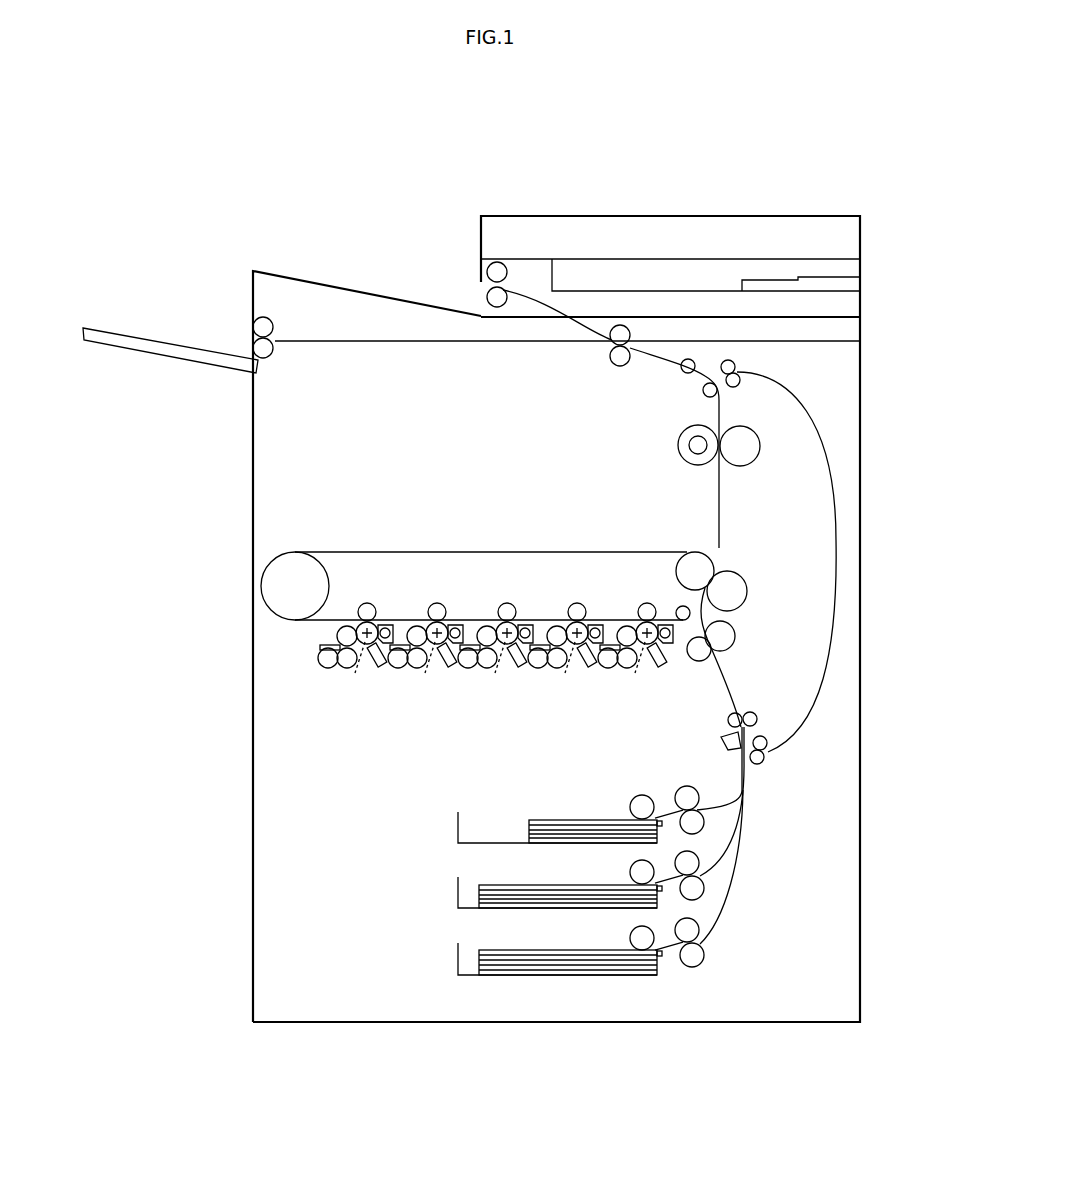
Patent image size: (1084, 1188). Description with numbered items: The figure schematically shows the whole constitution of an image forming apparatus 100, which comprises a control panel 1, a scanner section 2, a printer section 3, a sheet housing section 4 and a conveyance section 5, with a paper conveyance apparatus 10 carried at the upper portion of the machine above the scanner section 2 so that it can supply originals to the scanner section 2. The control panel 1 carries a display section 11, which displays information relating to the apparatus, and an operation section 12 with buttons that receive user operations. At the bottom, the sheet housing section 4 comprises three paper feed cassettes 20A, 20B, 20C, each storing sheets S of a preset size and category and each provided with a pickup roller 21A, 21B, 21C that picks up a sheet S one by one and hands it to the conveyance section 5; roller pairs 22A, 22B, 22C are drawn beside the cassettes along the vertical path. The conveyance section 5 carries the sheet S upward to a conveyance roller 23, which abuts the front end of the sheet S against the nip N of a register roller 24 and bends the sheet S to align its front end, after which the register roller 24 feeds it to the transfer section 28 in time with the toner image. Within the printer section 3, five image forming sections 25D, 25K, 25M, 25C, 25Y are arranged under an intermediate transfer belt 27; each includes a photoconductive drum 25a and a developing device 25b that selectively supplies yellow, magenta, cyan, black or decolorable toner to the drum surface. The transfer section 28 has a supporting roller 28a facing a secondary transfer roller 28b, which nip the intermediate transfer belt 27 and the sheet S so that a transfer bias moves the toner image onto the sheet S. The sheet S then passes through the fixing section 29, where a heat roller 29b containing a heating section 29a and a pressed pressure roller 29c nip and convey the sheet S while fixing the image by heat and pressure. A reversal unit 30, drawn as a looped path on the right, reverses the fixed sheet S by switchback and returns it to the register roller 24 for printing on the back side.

The image forming apparatus 100 is at (820, 152).
The control panel 1 is at (670, 226).
The scanner section 2 is at (630, 273).
The paper conveyance apparatus 10 is at (613, 354).
The display section 11 is at (785, 270).
The operation section 12 is at (835, 270).
The printer section 3 is at (507, 603).
The sheet housing section 4 is at (504, 879).
The conveyance section 5 is at (738, 805).
The intermediate transfer belt 27 is at (466, 551).
The image forming section 25D is at (350, 606).
The image forming section 25K is at (432, 614).
The image forming section 25M is at (501, 614).
The image forming section 25C is at (572, 614).
The image forming section 25Y is at (642, 614).
The photoconductive drum 25a is at (370, 663).
The developing device 25b is at (340, 670).
The transfer section 28 is at (732, 559).
The supporting roller 28a is at (703, 560).
The secondary transfer roller 28b is at (735, 590).
The fixing section 29 is at (691, 428).
The heating section 29a is at (696, 437).
The heat roller 29b is at (690, 458).
The pressure roller 29c is at (752, 447).
The reversal unit 30 is at (840, 507).
The register roller 24 is at (728, 640).
The nip N is at (712, 648).
The conveyance roller 23 is at (732, 715).
The paper feed cassette 20A is at (458, 822).
The paper feed cassette 20B is at (458, 887).
The paper feed cassette 20C is at (458, 953).
The pickup roller 21A is at (632, 800).
The pickup roller 21B is at (632, 865).
The pickup roller 21C is at (632, 931).
The feed roller pair 22A is at (700, 822).
The feed roller pair 22B is at (700, 888).
The feed roller pair 22C is at (700, 955).
The sheet S is at (545, 819).